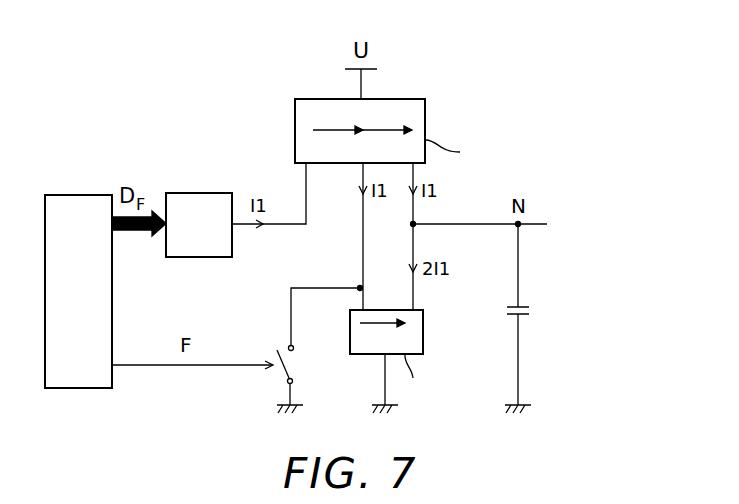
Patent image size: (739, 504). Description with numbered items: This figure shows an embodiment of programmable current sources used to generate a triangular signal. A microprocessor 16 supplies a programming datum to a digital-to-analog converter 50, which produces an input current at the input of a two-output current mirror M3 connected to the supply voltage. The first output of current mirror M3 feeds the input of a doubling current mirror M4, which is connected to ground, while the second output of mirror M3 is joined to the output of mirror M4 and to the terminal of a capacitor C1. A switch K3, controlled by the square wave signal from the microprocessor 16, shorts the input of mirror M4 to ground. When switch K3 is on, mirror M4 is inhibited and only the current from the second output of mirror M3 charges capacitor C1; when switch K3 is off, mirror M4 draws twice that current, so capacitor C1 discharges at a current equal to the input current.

The microprocessor 16 is at (100, 380).
The digital-to-analog converter 50 is at (197, 205).
The two-output current mirror M3 is at (426, 112).
The doubling current mirror M4 is at (415, 343).
The switch K3 is at (307, 350).
The capacitor C1 is at (533, 318).